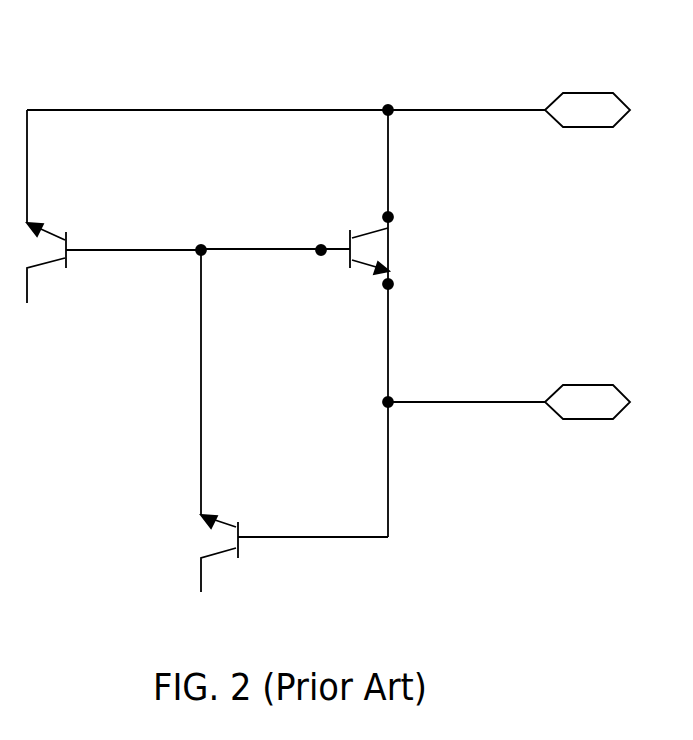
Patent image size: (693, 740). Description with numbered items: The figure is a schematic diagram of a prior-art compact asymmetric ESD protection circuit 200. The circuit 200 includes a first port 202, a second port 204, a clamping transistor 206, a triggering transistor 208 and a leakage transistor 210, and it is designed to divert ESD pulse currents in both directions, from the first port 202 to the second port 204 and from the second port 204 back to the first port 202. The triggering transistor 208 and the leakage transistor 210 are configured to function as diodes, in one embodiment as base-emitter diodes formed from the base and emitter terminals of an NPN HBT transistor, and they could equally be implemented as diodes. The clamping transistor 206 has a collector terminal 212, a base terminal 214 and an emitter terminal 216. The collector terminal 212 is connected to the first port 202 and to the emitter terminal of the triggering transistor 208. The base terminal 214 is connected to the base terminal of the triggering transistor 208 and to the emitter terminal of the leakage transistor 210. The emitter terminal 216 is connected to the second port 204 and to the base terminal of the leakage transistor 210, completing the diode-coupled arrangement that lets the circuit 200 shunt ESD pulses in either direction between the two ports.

The compact asymmetric ESD protection circuit 200 is at (305, 49).
The first port 202 is at (583, 93).
The second port 204 is at (585, 419).
The clamping transistor 206 is at (365, 233).
The triggering transistor 208 is at (52, 233).
The leakage transistor 210 is at (228, 522).
The collector terminal 212 is at (392, 212).
The base terminal 214 is at (318, 254).
The emitter terminal 216 is at (392, 286).